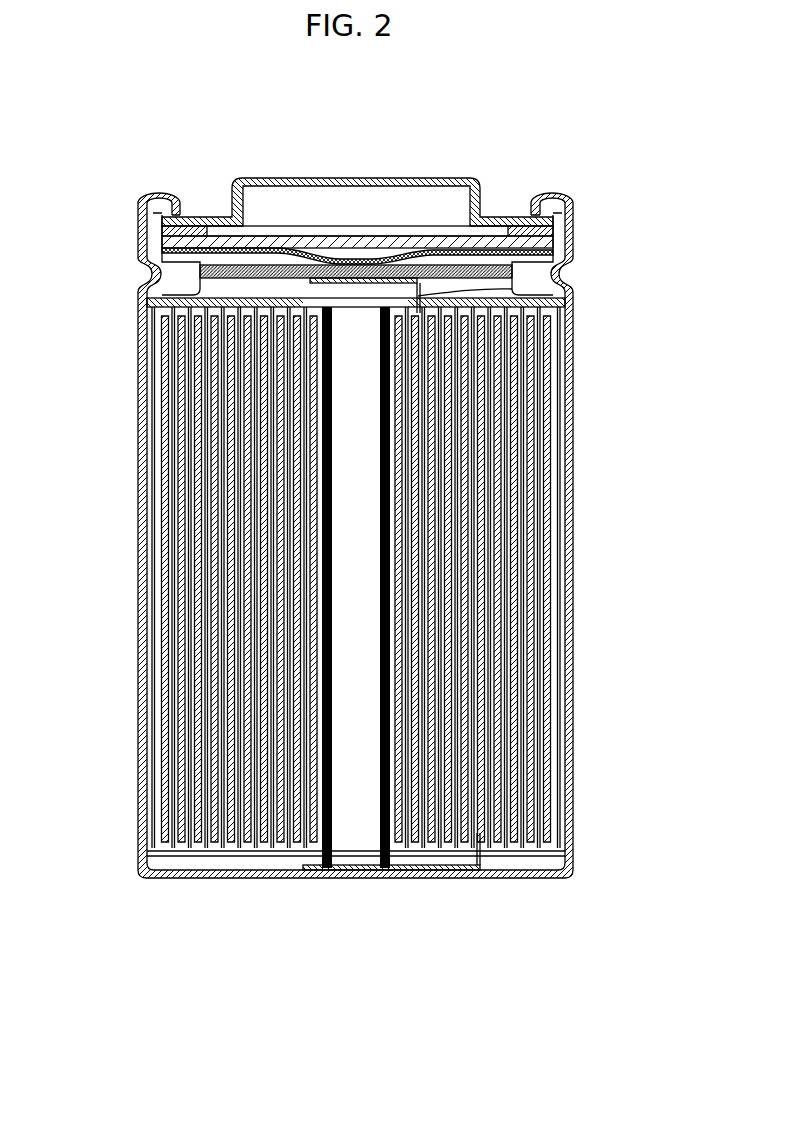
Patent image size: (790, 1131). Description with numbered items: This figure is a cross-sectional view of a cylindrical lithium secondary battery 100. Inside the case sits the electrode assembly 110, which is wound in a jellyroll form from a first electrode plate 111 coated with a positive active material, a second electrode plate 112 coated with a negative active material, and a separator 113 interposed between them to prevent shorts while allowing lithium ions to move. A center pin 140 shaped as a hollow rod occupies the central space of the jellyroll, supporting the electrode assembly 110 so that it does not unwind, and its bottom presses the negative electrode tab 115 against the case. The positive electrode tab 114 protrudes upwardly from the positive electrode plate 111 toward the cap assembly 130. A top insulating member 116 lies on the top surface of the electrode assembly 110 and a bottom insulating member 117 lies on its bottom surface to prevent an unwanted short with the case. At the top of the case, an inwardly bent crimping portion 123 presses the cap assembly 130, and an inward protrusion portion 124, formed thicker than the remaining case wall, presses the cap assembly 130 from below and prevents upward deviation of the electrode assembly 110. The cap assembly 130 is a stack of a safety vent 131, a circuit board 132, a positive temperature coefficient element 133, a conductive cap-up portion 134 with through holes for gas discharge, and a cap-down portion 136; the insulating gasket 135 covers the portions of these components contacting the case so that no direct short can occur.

The cylindrical lithium secondary battery 100 is at (612, 154).
The electrode assembly 110 is at (640, 345).
The first electrode plate 111 is at (533, 434).
The second electrode plate 112 is at (549, 349).
The separator 113 is at (538, 392).
The positive electrode tab 114 is at (524, 290).
The negative electrode tab 115 is at (480, 866).
The top insulating member 116 is at (147, 297).
The bottom insulating member 117 is at (560, 873).
The crimping portion 123 is at (140, 202).
The inward protrusion portion 124 is at (151, 275).
The cap assembly 130 is at (497, 133).
The safety vent 131 is at (306, 256).
The circuit board 132 is at (378, 240).
The positive temperature coefficient (PTC) element 133 is at (433, 230).
The cap-up portion 134 is at (258, 178).
The insulating gasket 135 is at (551, 207).
The cap-down portion 136 is at (270, 268).
The center pin 140 is at (384, 870).